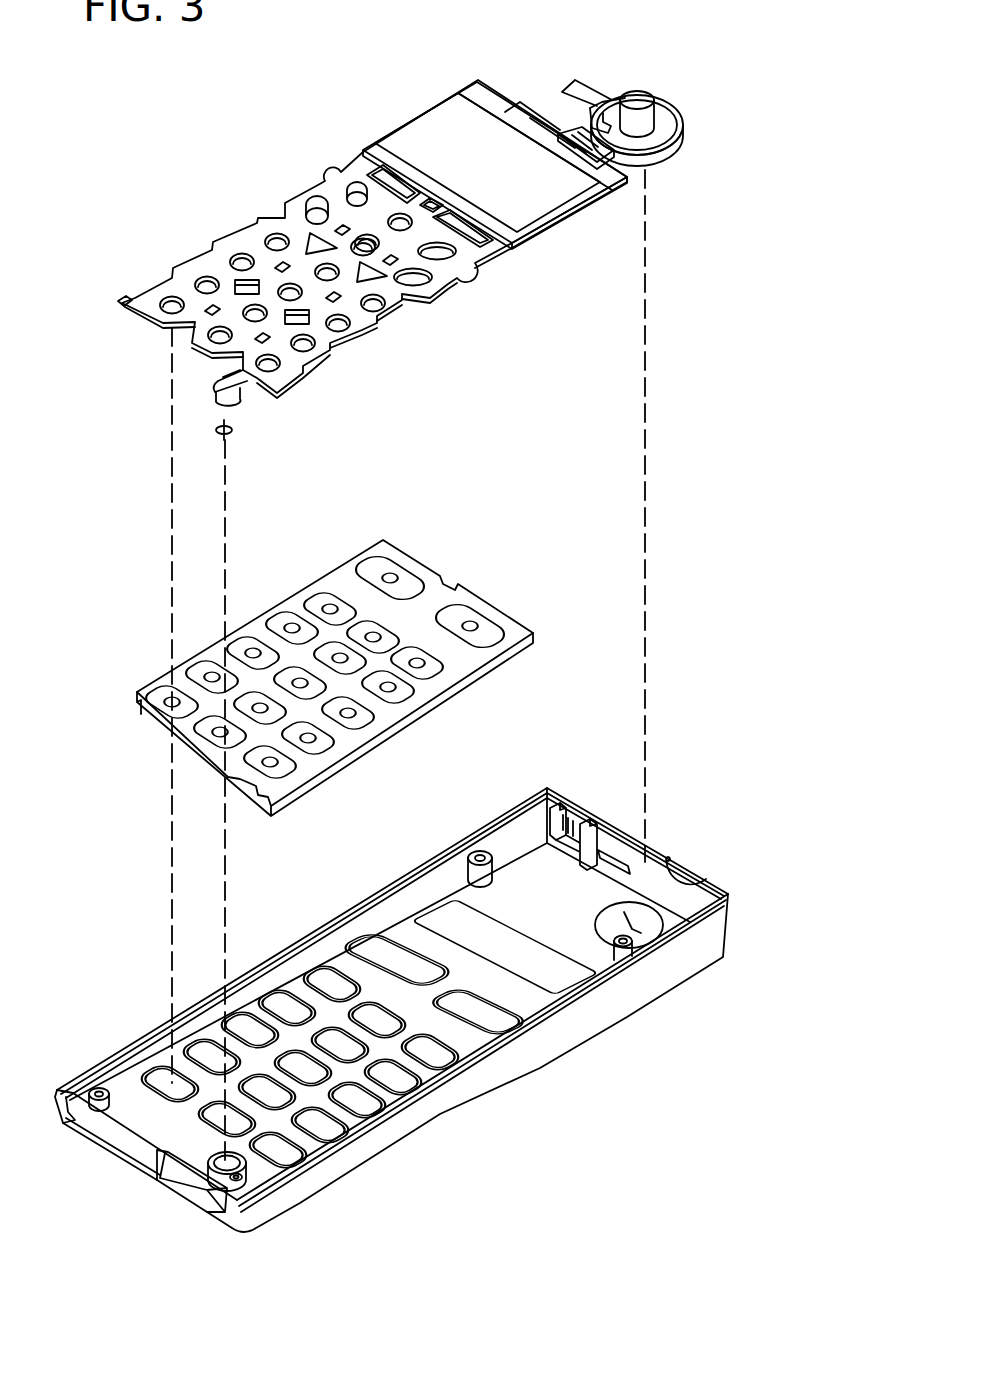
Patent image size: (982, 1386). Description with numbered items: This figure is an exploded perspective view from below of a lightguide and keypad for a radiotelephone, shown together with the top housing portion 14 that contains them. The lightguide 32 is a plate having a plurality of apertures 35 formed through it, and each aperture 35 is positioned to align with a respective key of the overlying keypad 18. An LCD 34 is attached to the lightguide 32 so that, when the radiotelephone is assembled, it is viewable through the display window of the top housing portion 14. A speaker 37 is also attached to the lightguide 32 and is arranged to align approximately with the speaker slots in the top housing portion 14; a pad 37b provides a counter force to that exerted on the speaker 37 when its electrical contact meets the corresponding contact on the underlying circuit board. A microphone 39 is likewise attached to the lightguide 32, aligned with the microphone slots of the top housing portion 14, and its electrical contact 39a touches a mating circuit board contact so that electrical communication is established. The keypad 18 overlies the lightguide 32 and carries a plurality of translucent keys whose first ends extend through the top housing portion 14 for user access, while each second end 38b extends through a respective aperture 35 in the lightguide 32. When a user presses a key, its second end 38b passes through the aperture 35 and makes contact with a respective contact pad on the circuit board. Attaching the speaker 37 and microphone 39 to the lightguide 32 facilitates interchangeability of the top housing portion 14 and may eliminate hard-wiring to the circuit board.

The top housing portion 14 is at (718, 937).
The keypad 18 is at (413, 553).
The lightguide 32 is at (372, 239).
The LCD 34 is at (373, 152).
The apertures 35 is at (303, 208).
The speaker 37 is at (686, 136).
The pad 37b is at (640, 102).
The second end 38b is at (383, 577).
The microphone 39 is at (213, 402).
The electrical contact 39a is at (213, 382).